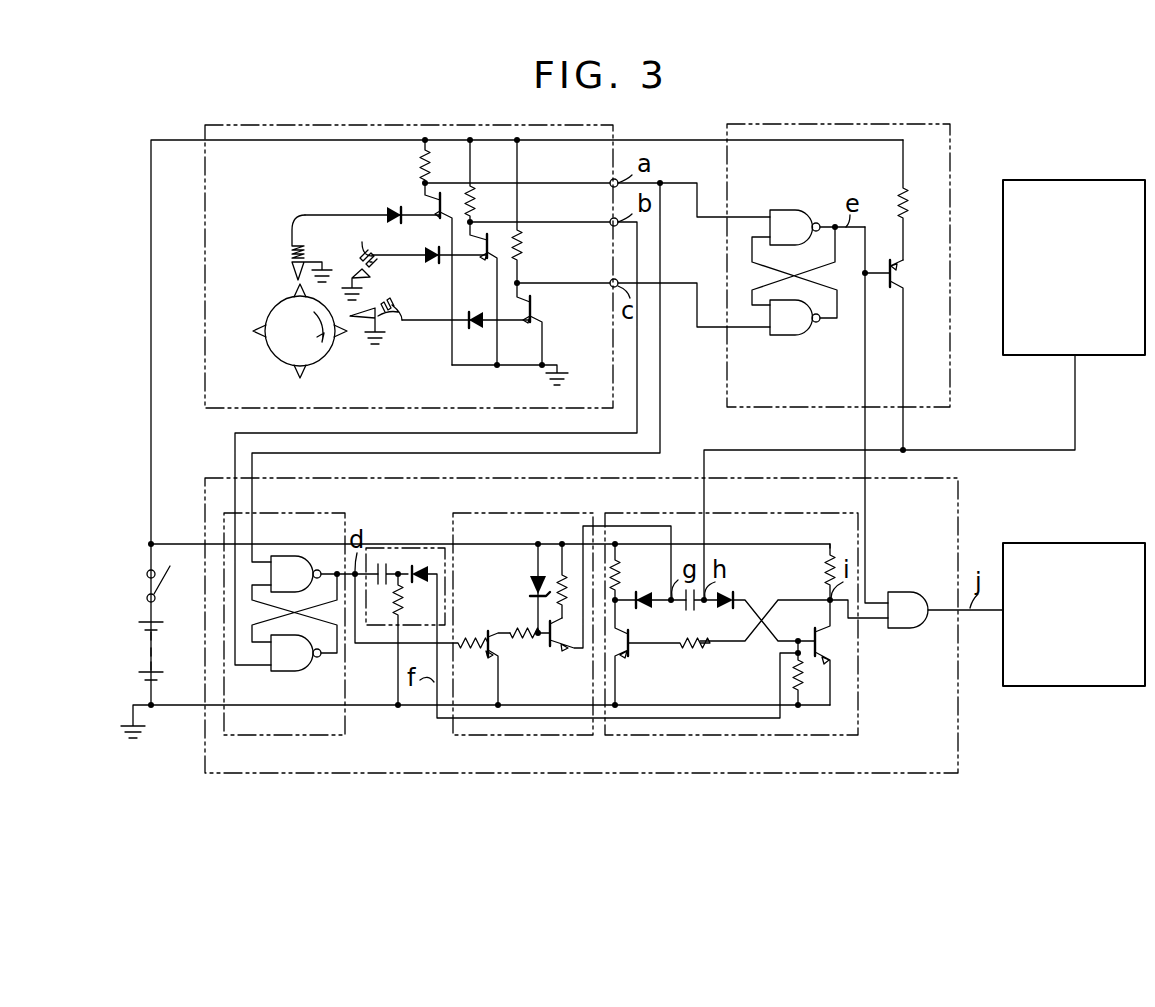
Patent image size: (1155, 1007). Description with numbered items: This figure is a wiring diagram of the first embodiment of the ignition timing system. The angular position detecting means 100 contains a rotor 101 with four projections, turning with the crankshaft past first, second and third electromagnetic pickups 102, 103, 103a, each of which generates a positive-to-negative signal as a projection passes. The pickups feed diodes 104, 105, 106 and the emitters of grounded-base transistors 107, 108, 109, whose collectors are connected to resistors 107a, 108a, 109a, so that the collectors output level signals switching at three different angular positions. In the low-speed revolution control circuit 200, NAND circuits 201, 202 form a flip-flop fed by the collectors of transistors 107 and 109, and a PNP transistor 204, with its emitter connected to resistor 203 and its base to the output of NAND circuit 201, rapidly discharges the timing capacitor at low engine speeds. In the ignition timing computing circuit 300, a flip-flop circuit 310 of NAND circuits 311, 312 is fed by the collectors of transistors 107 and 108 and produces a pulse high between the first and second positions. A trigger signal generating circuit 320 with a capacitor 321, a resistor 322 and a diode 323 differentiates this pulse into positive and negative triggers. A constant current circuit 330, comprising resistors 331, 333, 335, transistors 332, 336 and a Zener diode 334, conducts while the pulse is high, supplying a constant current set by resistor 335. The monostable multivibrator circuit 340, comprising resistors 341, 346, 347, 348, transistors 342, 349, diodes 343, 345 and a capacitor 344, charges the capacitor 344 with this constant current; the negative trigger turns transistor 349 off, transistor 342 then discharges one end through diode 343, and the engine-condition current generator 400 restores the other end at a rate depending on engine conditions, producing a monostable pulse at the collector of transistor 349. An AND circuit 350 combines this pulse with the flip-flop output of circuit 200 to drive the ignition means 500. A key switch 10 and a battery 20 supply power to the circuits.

The key switch 10 is at (159, 582).
The battery 20 is at (149, 646).
The angular position detecting means 100 is at (320, 125).
The rotor 101 is at (276, 358).
The first electromagnetic pickup 102 is at (286, 254).
The second electromagnetic pickup 103 is at (371, 280).
The third electromagnetic pickup 103a is at (382, 335).
The diode 104 is at (372, 208).
The diode 105 is at (424, 249).
The diode 106 is at (476, 330).
The transistor 107 is at (434, 204).
The resistor 107a is at (420, 166).
The transistor 108 is at (487, 240).
The resistor 108a is at (478, 196).
The transistor 109 is at (531, 298).
The resistor 109a is at (523, 248).
The low-speed revolution control circuit 200 is at (868, 125).
The NAND circuit 201 is at (804, 210).
The NAND circuit 202 is at (792, 338).
The resistor 203 is at (896, 199).
The PNP transistor 204 is at (887, 290).
The ignition timing computing circuit 300 is at (958, 750).
The flip-flop circuit 310 is at (281, 735).
The NAND circuit 311 is at (306, 556).
The NAND circuit 312 is at (300, 672).
The trigger signal generating circuit 320 is at (438, 548).
The capacitor 321 is at (380, 564).
The resistor 322 is at (404, 600).
The diode 323 is at (427, 572).
The constant current circuit 330 is at (547, 735).
The resistor 331 is at (476, 640).
The transistor 332 is at (490, 655).
The resistor 333 is at (513, 636).
The Zener diode 334 is at (536, 574).
The resistor 335 is at (564, 582).
The transistor 336 is at (577, 652).
The monostable multivibrator circuit 340 is at (756, 735).
The resistor 341 is at (622, 574).
The transistor 342 is at (634, 652).
The diode 343 is at (650, 602).
The capacitor 344 is at (692, 602).
The diode 345 is at (736, 585).
The resistor 346 is at (688, 648).
The resistor 347 is at (824, 572).
The resistor 348 is at (806, 676).
The transistor 349 is at (830, 644).
The AND circuit 350 is at (904, 592).
The engine-condition current generator 400 is at (1075, 180).
The ignition means 500 is at (1075, 542).